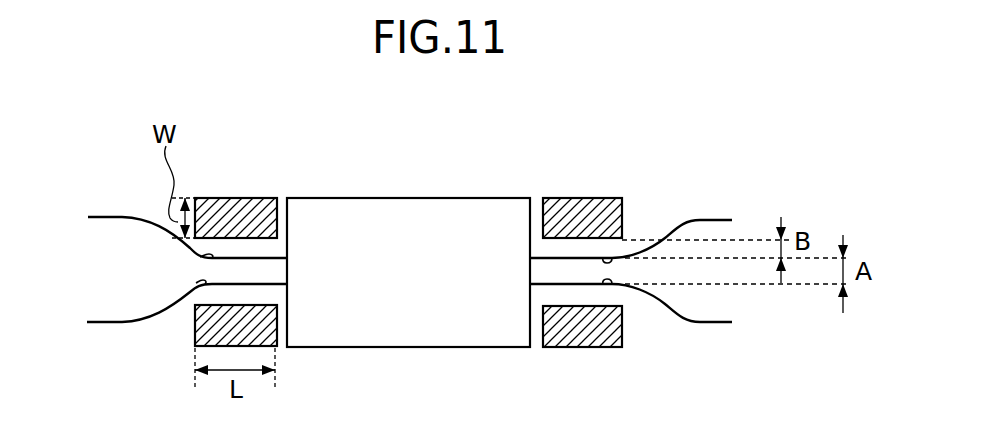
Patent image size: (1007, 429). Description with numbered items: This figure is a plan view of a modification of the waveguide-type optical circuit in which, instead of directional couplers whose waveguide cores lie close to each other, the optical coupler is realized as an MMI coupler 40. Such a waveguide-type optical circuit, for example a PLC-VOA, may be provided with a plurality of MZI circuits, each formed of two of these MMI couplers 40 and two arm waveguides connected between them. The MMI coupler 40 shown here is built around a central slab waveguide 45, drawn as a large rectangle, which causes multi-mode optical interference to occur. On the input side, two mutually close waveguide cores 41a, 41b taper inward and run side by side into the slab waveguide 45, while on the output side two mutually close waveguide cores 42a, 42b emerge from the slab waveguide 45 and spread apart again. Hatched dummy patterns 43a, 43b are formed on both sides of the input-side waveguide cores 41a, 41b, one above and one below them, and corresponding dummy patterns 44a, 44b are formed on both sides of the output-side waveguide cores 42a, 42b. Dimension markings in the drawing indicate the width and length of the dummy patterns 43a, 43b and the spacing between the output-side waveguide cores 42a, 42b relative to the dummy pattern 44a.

The MMI coupler 40 is at (405, 192).
The input-side waveguide core 41a is at (212, 258).
The input-side waveguide core 41b is at (205, 284).
The output-side waveguide core 42a is at (605, 262).
The output-side waveguide core 42b is at (605, 281).
The dummy pattern 43a is at (233, 212).
The dummy pattern 43b is at (203, 325).
The dummy pattern 44a is at (585, 205).
The dummy pattern 44b is at (582, 335).
The slab waveguide 45 is at (468, 217).